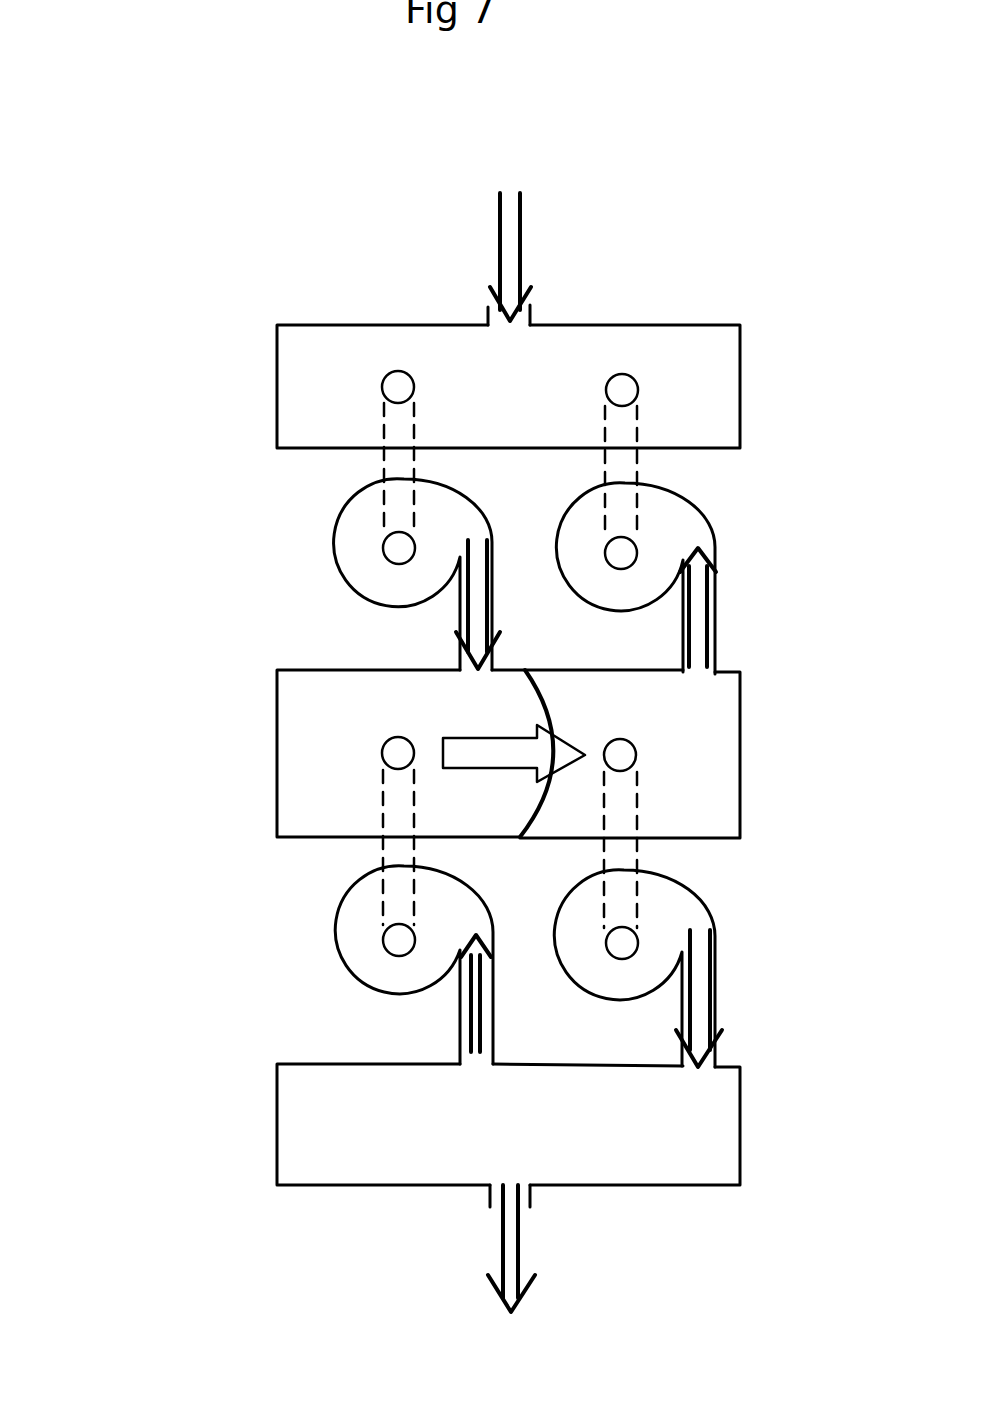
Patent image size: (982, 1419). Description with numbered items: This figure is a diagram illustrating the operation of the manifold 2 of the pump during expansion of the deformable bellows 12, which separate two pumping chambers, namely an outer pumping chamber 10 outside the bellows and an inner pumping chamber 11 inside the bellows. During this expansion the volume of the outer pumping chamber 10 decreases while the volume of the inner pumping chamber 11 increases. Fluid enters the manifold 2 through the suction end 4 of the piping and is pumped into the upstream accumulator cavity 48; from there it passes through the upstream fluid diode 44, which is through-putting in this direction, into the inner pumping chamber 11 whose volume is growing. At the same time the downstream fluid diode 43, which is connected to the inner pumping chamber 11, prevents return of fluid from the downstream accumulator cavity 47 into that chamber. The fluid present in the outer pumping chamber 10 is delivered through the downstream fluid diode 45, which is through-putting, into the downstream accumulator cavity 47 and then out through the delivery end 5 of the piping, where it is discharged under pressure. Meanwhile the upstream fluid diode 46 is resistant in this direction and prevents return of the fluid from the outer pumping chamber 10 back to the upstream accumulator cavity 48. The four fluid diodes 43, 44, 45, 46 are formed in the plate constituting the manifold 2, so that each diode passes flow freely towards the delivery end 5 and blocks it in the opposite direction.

The manifold 2 is at (152, 670).
The suction end 4 is at (532, 323).
The delivery end 5 is at (532, 1195).
The outer pumping chamber 10 is at (713, 717).
The inner pumping chamber 11 is at (293, 708).
The deformable bellows 12 is at (551, 700).
The downstream fluid diode 43 is at (360, 955).
The upstream fluid diode 44 is at (352, 535).
The downstream fluid diode 45 is at (688, 907).
The upstream fluid diode 46 is at (687, 510).
The downstream accumulator cavity 47 is at (305, 1132).
The upstream accumulator cavity 48 is at (726, 368).